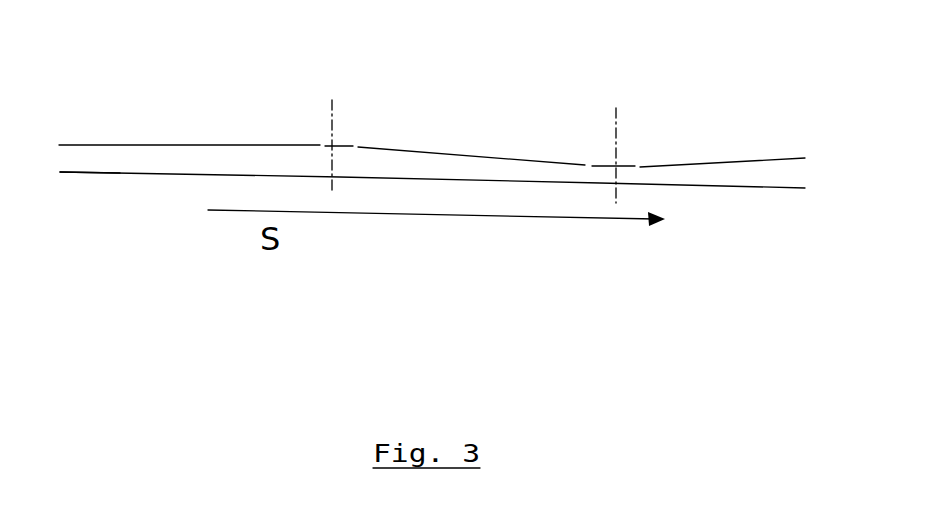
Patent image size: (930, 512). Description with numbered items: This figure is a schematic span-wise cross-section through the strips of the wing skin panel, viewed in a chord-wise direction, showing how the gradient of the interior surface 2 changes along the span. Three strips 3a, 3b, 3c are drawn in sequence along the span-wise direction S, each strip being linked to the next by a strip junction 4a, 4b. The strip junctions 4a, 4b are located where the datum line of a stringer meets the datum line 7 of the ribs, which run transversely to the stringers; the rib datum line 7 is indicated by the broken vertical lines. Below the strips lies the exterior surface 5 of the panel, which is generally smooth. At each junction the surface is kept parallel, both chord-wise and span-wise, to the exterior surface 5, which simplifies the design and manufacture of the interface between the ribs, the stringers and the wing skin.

The interior surface 2 is at (803, 150).
The strip 3a is at (157, 157).
The strip 3b is at (438, 170).
The strip 3c is at (710, 173).
The strip junction 4a is at (318, 142).
The strip junction 4b is at (620, 157).
The exterior surface 5 is at (70, 178).
The datum line of the ribs 7 is at (473, 84).